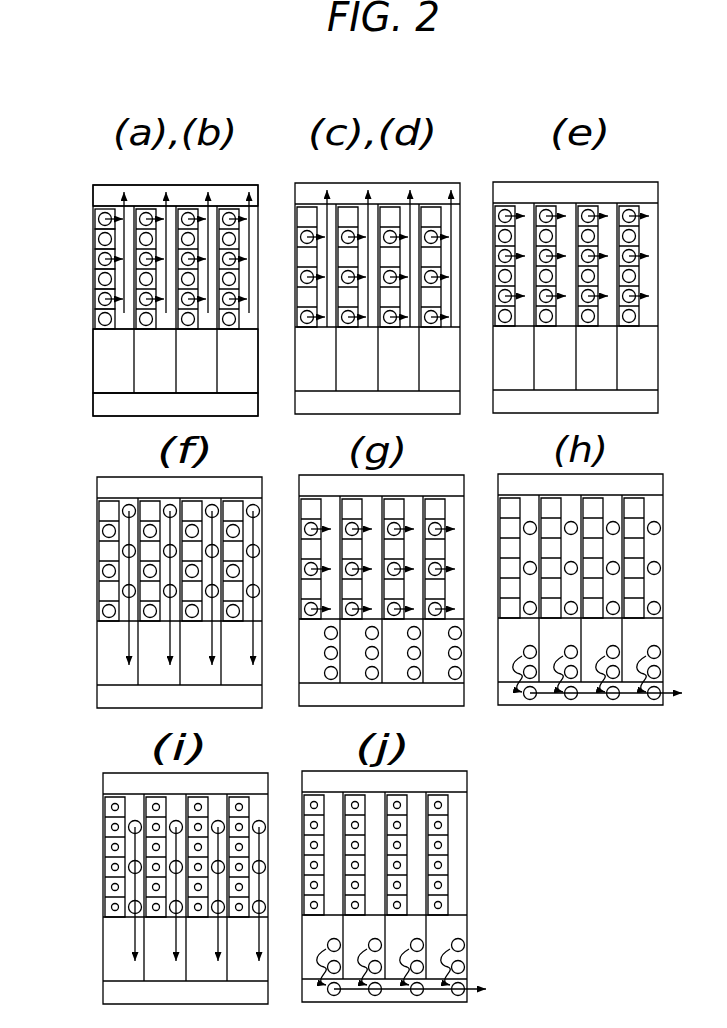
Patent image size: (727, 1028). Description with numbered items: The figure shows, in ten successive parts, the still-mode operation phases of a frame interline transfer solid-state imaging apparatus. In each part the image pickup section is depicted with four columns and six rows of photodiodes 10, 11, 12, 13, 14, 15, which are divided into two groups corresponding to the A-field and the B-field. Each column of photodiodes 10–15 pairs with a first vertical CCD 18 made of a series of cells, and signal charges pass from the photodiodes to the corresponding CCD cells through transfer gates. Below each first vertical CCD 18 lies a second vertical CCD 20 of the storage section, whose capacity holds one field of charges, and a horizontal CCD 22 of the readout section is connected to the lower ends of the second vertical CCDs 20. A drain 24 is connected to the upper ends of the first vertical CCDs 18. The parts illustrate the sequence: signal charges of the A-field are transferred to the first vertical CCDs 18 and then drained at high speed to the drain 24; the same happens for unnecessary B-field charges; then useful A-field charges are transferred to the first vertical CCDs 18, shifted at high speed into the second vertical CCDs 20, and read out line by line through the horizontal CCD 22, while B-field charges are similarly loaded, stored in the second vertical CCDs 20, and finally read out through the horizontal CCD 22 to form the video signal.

The photodiode 10 is at (95, 319).
The photodiode 11 is at (95, 299).
The photodiode 12 is at (95, 278).
The photodiode 13 is at (95, 258).
The photodiode 14 is at (95, 238).
The photodiode 15 is at (95, 219).
The first vertical CCD 18 is at (128, 216).
The second vertical CCD 20 is at (93, 368).
The horizontal CCD 22 is at (93, 406).
The drain 24 is at (223, 187).